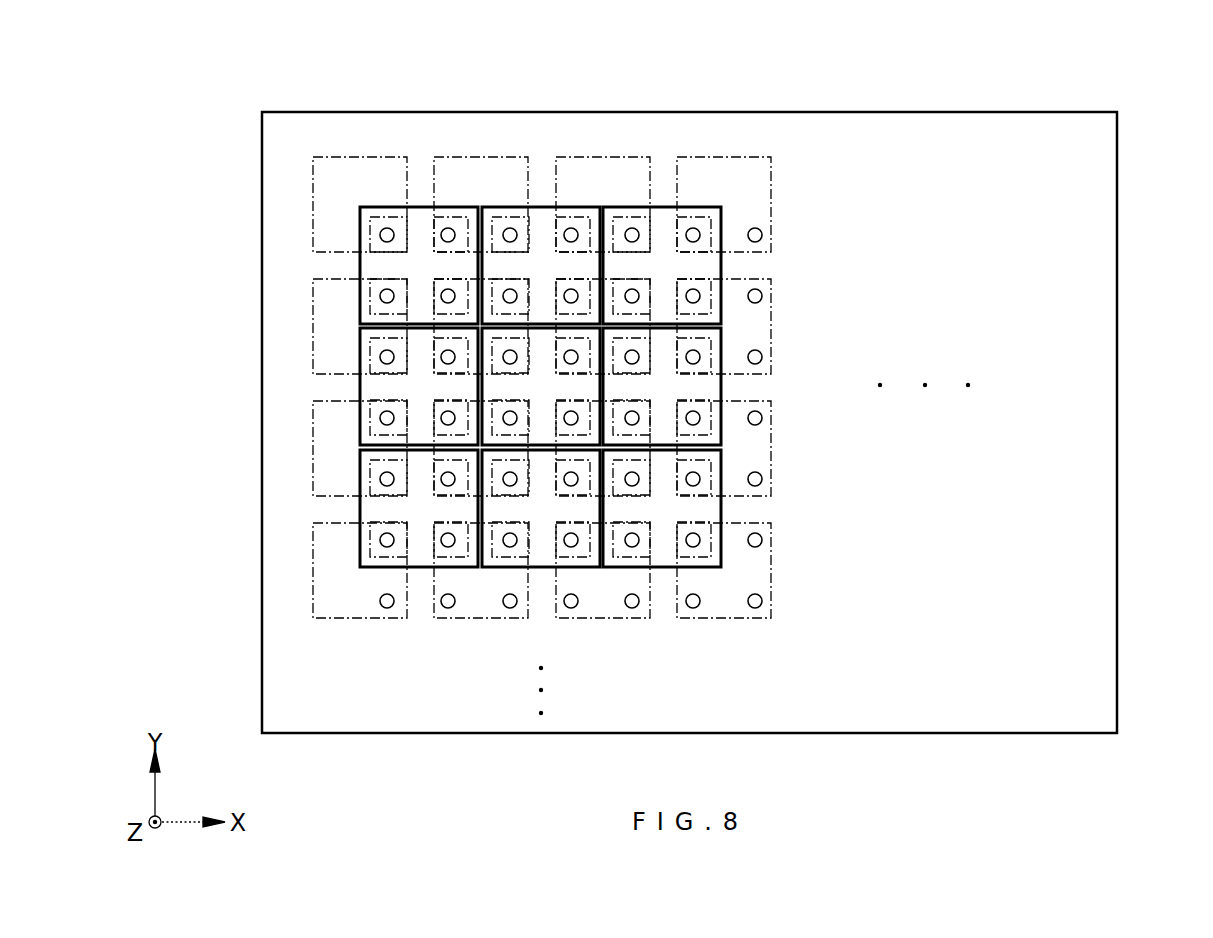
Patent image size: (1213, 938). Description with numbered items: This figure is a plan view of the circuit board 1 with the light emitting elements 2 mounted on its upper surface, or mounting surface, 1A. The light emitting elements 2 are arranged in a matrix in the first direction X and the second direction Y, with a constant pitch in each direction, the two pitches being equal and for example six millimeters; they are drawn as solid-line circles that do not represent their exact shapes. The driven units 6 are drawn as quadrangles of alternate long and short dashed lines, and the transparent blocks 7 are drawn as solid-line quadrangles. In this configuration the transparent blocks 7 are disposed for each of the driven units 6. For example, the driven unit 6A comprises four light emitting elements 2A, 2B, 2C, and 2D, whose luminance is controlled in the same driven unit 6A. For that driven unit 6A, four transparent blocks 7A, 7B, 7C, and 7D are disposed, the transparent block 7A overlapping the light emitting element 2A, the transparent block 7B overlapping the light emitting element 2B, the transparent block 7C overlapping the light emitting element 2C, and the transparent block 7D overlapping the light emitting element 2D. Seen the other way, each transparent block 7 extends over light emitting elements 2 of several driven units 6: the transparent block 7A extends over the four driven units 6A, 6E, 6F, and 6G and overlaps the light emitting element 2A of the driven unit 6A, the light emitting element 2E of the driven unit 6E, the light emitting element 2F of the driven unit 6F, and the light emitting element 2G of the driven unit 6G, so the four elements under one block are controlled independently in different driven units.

The circuit board 1 is at (1118, 112).
The upper surface (mounting surface) 1A is at (1092, 340).
The light emitting elements 2 is at (700, 360).
The light emitting element 2A is at (568, 290).
The light emitting element 2B is at (635, 290).
The light emitting element 2C is at (568, 364).
The light emitting element 2D is at (634, 364).
The light emitting element 2E is at (571, 227).
The light emitting element 2F is at (511, 227).
The light emitting element 2G is at (507, 289).
The driven units 6 is at (773, 232).
The driven unit 6A is at (609, 272).
The driven unit 6E is at (643, 157).
The driven unit 6F is at (461, 157).
The driven unit 6G is at (426, 284).
The transparent blocks 7 is at (360, 263).
The transparent block 7A is at (540, 207).
The transparent block 7B is at (708, 207).
The transparent block 7C is at (495, 323).
The transparent block 7D is at (722, 335).